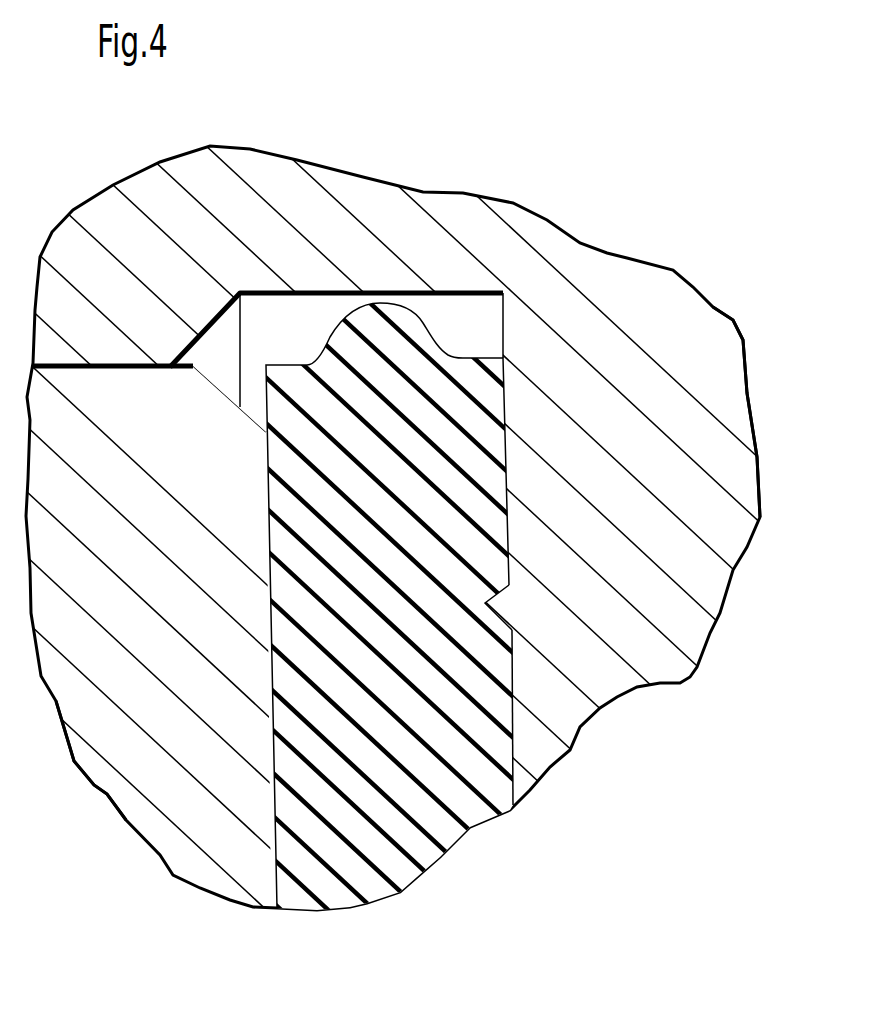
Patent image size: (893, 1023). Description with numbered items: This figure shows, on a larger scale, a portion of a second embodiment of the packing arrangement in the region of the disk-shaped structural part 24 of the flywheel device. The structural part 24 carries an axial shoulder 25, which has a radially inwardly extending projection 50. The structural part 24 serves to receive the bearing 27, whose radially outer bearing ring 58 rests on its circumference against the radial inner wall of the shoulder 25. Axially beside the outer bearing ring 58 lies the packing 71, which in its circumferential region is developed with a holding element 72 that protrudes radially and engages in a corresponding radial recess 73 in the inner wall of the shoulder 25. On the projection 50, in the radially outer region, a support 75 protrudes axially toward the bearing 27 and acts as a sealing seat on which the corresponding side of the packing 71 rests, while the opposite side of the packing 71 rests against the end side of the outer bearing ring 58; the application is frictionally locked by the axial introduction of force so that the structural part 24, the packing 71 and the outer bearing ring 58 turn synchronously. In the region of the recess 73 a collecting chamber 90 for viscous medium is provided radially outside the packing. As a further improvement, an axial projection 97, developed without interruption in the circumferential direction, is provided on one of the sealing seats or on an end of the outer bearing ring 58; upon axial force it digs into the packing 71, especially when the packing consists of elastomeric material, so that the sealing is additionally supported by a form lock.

The disk-shaped structural part 24 is at (680, 266).
The axial shoulder 25 is at (462, 230).
The bearing 27 is at (88, 792).
The radially inwardly extending projection 50 is at (723, 540).
The radially outer bearing ring 58 is at (185, 850).
The packing 71 is at (350, 887).
The holding element 72 is at (390, 313).
The radial recess 73 is at (490, 312).
The support 75 is at (760, 380).
The collecting chamber 90 is at (290, 308).
The axial projection 97 is at (500, 605).